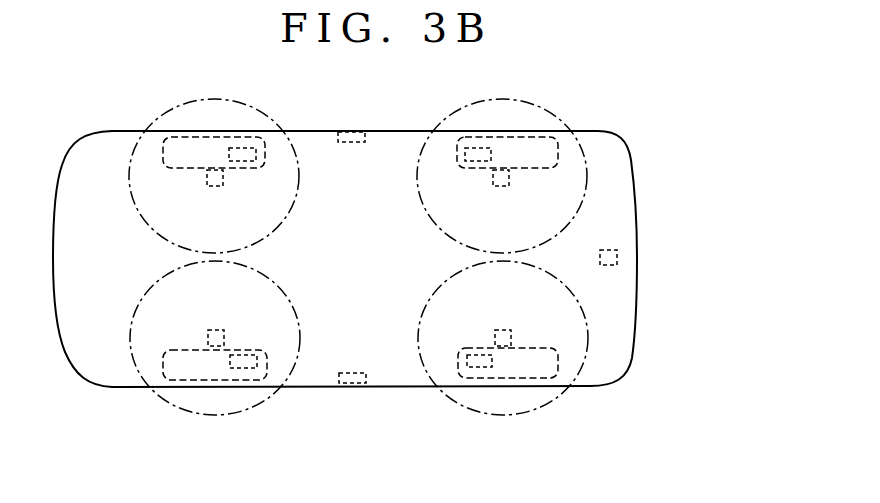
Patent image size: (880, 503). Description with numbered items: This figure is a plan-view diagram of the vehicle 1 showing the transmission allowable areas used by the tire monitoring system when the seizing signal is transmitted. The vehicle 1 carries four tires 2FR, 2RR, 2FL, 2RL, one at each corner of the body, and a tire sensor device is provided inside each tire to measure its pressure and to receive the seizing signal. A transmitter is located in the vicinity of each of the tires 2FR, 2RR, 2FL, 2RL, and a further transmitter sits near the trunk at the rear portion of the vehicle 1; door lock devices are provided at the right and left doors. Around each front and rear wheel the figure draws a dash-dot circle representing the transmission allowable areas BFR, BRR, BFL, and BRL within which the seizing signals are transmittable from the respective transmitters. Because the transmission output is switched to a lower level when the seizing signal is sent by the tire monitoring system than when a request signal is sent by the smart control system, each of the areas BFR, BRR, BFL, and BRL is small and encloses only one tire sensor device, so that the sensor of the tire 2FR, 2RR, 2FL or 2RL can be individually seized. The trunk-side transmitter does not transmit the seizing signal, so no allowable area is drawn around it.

The vehicle 1 is at (393, 123).
The transmission allowable area BFR is at (180, 112).
The transmission allowable area BRR is at (543, 108).
The transmission allowable area BFL is at (170, 403).
The transmission allowable area BRL is at (540, 405).
The tire 2FR is at (235, 135).
The tire 2RR is at (513, 135).
The tire 2FL is at (225, 378).
The tire 2RL is at (487, 377).